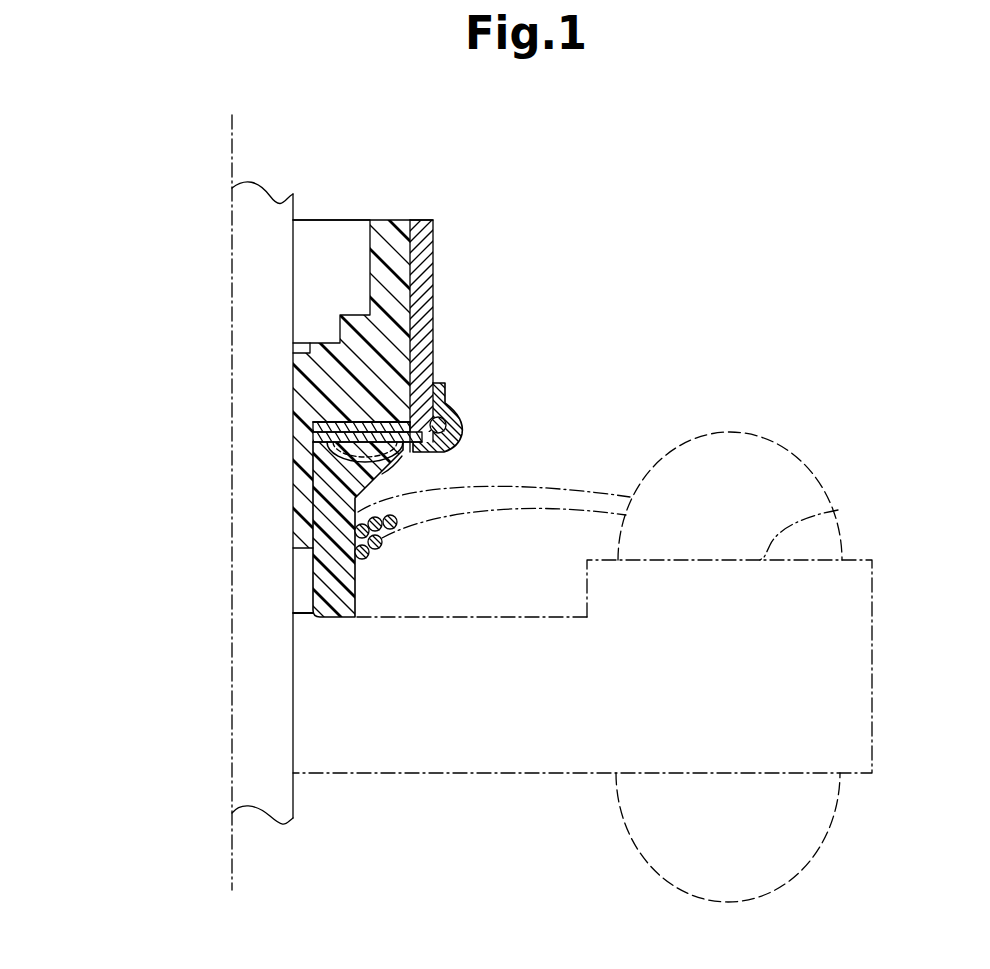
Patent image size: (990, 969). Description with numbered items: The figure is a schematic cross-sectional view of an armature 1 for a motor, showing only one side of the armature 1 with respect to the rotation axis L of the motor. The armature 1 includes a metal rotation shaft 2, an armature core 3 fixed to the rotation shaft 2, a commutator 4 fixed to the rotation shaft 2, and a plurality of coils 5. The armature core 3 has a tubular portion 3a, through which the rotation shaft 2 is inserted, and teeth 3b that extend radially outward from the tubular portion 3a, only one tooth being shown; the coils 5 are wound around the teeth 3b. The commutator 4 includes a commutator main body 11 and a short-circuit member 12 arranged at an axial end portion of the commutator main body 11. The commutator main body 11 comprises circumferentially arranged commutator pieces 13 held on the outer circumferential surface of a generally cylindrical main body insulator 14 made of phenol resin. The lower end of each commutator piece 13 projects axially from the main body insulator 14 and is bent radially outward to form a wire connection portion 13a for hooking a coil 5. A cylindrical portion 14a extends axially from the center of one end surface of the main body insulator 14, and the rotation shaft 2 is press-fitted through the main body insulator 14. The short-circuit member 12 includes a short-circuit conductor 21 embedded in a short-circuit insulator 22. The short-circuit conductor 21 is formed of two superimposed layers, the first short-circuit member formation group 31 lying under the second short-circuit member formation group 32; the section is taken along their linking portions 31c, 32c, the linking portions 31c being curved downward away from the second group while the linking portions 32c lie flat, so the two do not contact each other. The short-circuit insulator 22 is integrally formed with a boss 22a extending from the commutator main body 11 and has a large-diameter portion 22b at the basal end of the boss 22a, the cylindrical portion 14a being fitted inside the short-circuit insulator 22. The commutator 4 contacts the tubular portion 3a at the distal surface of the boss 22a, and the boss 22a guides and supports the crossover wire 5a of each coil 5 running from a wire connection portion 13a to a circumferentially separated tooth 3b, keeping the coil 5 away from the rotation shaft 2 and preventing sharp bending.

The armature 1 is at (650, 240).
The rotation shaft 2 is at (264, 196).
The armature core 3 is at (622, 617).
The tubular portion 3a is at (357, 604).
The tooth 3b is at (834, 508).
The commutator 4 is at (419, 320).
The coil 5 is at (598, 631).
The crossover wire 5a is at (404, 540).
The commutator main body 11 is at (436, 245).
The short-circuit member 12 is at (384, 410).
The commutator piece 13 is at (382, 350).
The wire connection portion 13a is at (447, 402).
The main body insulator 14 is at (351, 324).
The cylindrical portion 14a is at (293, 484).
The short-circuit conductor 21 is at (283, 398).
The short-circuit insulator 22 is at (364, 529).
The boss 22a is at (313, 577).
The large-diameter portion 22b is at (413, 477).
The first short-circuit member formation group 31 is at (314, 440).
The linking portion 31c is at (310, 468).
The second short-circuit member formation group 32 is at (314, 422).
The linking portion 32c is at (350, 412).
The rotation axis L is at (232, 858).